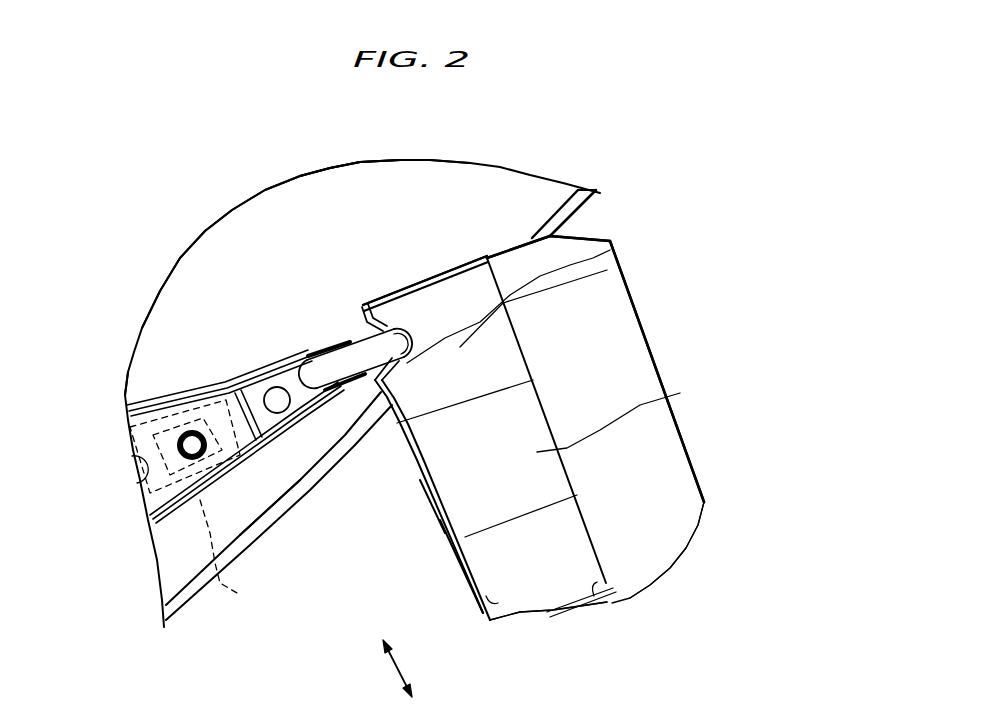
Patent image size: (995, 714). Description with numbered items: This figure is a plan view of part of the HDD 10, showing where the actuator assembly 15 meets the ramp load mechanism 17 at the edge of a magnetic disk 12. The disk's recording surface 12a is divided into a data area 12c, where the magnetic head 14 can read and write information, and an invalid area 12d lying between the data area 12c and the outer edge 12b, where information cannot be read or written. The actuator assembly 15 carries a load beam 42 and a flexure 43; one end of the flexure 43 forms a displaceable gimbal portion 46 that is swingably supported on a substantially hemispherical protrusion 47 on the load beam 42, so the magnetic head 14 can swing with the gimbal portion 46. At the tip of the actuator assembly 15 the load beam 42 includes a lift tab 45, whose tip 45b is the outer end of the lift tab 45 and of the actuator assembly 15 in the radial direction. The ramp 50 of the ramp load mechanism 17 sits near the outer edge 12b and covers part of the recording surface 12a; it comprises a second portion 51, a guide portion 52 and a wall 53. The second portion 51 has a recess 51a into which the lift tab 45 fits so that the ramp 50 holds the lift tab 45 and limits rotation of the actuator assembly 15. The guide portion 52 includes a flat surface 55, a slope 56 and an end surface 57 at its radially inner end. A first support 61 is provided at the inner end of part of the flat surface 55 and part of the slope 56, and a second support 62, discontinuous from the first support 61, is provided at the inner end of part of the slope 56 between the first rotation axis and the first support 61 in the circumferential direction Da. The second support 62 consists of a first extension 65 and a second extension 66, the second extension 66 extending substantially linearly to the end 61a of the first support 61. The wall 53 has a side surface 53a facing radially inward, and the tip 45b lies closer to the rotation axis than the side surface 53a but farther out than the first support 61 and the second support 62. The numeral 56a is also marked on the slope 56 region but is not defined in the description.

The HDD 10 is at (127, 217).
The magnetic disk 12 is at (362, 374).
The recording surface 12a is at (385, 162).
The outer edge 12b is at (279, 533).
The data area 12c is at (302, 175).
The invalid area 12d is at (280, 526).
The magnetic head 14 is at (184, 339).
The actuator assembly 15 is at (146, 397).
The ramp load mechanism 17 is at (691, 371).
The load beam 42 is at (227, 316).
The flexure 43 is at (92, 378).
The lift tab 45 is at (269, 345).
The tip 45b is at (435, 223).
The gimbal portion 46 is at (235, 554).
The protrusion 47 is at (160, 362).
The ramp 50 is at (630, 428).
The second portion 51 is at (522, 613).
The recess 51a is at (473, 613).
The guide portion 52 is at (551, 420).
The wall 53 is at (692, 511).
The side surface 53a is at (584, 627).
The flat surface 55 is at (636, 417).
The slope 56 is at (527, 282).
The upper flange tab 56a is at (541, 184).
The end surface 57 is at (427, 532).
The first support 61 is at (424, 500).
The end 61a is at (373, 431).
The second support 62 is at (400, 200).
The first extension 65 is at (415, 208).
The second extension 66 is at (568, 302).
The circumferential direction Da is at (376, 675).